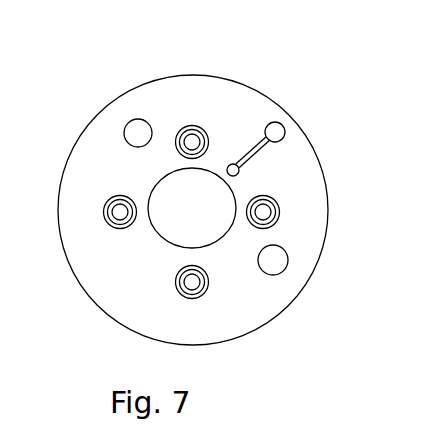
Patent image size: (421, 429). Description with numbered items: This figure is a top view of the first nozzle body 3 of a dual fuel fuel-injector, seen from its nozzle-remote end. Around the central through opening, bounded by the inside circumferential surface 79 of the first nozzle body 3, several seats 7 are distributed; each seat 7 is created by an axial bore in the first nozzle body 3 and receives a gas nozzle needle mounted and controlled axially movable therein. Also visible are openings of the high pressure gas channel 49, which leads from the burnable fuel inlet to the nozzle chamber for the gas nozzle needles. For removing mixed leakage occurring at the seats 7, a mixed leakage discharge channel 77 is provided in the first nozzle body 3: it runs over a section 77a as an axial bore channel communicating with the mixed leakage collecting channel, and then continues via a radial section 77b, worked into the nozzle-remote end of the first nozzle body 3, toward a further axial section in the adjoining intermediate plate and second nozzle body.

The first nozzle body 3 is at (112, 273).
The seat 7 is at (245, 337).
The high pressure gas channel 49 is at (133, 120).
The mixed leakage discharge channel 77 is at (314, 118).
The section of mixed leakage discharge channel 77a is at (240, 172).
The radial section 77b is at (314, 94).
The inside circumferential surface 79 is at (165, 241).